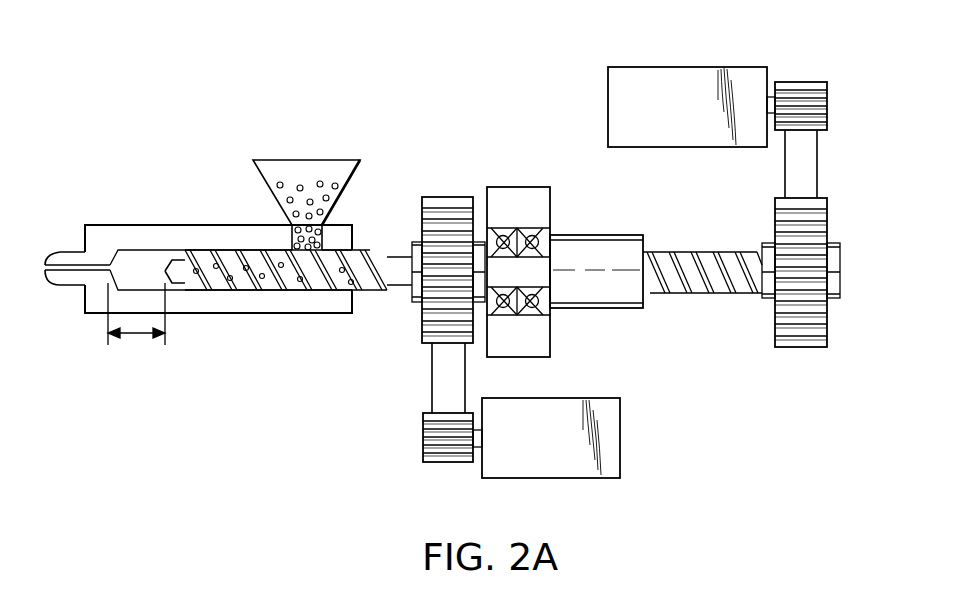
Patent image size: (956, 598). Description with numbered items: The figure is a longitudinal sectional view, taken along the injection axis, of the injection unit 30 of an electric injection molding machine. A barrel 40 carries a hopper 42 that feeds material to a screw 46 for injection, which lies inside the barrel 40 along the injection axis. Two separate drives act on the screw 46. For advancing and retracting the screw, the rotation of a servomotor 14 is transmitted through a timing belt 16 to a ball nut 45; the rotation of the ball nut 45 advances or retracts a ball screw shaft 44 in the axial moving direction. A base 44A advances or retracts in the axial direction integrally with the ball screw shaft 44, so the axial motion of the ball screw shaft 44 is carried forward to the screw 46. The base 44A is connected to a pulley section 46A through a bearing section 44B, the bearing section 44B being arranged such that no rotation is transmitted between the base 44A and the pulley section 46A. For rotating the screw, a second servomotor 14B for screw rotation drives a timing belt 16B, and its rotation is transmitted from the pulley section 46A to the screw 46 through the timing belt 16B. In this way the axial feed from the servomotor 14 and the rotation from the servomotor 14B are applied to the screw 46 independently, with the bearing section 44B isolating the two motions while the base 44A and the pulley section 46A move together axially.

The injection unit 30 is at (452, 63).
The barrel 40 is at (170, 225).
The hopper 42 is at (311, 160).
The screw 46 is at (252, 298).
The pulley section 46A is at (415, 242).
The bearing section 44B is at (522, 187).
The base 44A is at (598, 235).
The ball screw shaft 44 is at (705, 295).
The ball nut 45 is at (841, 268).
The timing belt 16 is at (817, 157).
The servomotor 14 is at (608, 85).
The timing belt 16B is at (432, 380).
The servomotor for screw rotation 14B is at (620, 428).